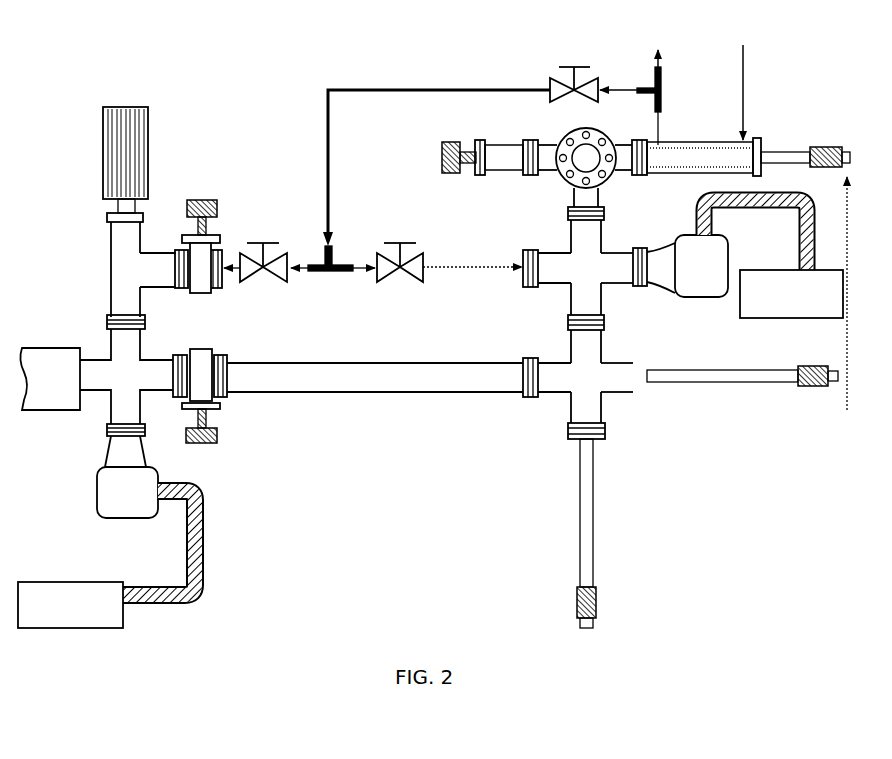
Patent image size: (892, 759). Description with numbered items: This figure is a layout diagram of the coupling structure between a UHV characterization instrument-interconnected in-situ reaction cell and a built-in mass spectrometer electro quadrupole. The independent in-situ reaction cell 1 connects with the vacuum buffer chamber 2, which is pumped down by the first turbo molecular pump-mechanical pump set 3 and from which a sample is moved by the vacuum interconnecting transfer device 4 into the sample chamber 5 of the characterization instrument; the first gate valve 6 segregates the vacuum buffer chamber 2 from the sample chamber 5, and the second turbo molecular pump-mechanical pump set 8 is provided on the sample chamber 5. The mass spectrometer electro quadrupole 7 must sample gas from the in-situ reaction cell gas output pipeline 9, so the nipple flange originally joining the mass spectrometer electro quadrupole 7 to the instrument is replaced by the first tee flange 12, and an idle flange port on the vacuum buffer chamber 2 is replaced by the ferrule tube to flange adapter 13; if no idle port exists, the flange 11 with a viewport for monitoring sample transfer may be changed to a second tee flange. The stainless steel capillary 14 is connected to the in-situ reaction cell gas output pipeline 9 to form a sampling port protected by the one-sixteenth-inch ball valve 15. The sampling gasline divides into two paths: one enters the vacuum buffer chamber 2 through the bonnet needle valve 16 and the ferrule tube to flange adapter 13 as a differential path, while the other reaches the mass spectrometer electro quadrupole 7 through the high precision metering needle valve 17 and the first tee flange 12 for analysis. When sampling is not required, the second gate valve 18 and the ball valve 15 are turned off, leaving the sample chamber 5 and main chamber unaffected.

The independent in-situ reaction cell 1 is at (691, 140).
The vacuum buffer chamber 2 is at (592, 291).
The first turbo molecular pump-mechanical pump set 3 is at (728, 266).
The vacuum interconnecting transfer device 4 is at (602, 611).
The sample chamber 5 is at (147, 358).
The first gate valve 6 is at (204, 348).
The mass spectrometer electro quadrupole 7 is at (148, 106).
The second turbo molecular pump-mechanical pump set 8 is at (152, 465).
The in-situ reaction cell gas output pipeline 9 is at (661, 52).
The flange with a viewport for monitoring sample transfer 11 is at (606, 100).
The first tee flange 12 is at (149, 253).
The ferrule tube to flange adapter 13 is at (526, 248).
The stainless steel capillary 14 is at (613, 88).
The 1/16" ball valve 15 is at (572, 62).
The bonnet needle valve 16 is at (400, 241).
The high precision metering needle valve 17 is at (262, 241).
The second gate valve 18 is at (200, 199).